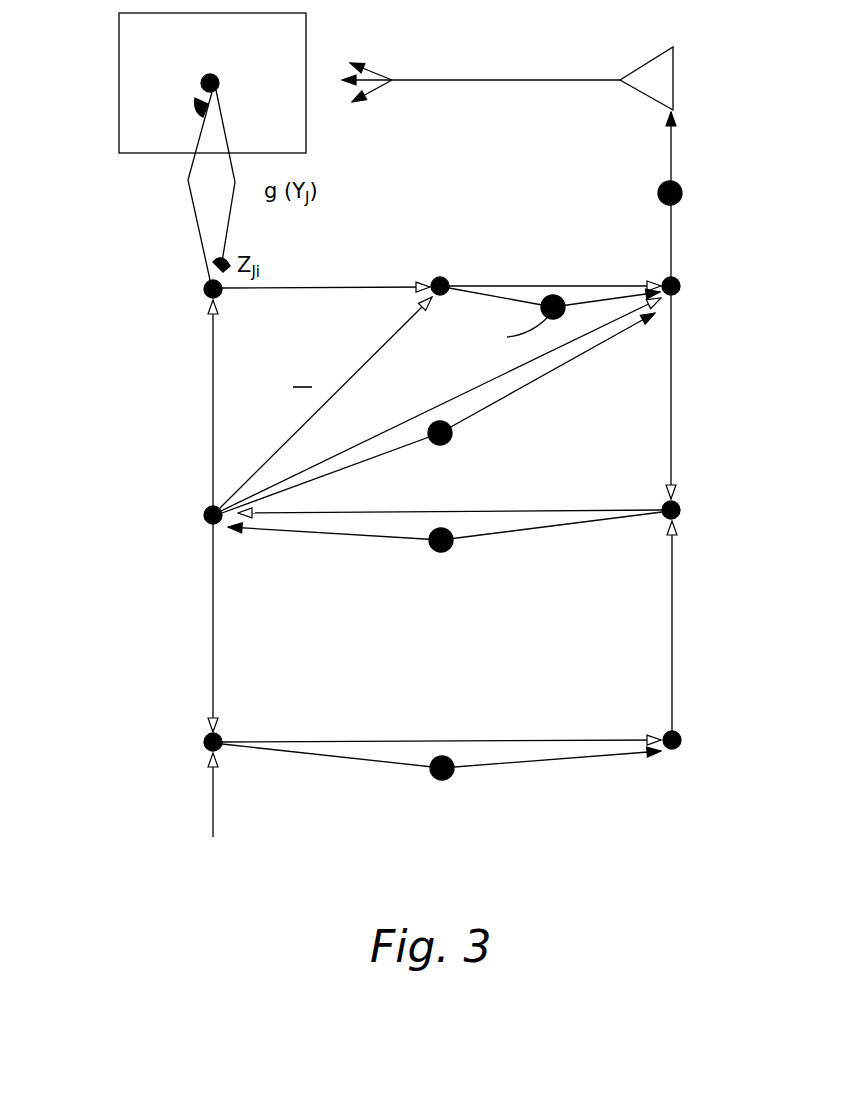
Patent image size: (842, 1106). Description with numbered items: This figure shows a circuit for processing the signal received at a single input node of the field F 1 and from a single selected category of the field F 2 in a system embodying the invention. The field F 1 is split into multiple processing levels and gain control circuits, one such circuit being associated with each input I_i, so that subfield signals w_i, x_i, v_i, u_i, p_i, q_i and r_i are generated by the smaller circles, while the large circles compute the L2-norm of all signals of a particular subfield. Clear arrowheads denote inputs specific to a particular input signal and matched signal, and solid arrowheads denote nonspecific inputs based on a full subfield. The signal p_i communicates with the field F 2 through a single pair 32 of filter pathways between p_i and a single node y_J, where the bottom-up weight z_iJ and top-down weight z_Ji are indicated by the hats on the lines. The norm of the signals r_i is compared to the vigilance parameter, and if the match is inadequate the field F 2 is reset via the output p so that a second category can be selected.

The pair of filter pathways 32 is at (180, 204).
The F2 field (Y_J node box) 2 is at (212, 83).
The F1 field (neural network node i) 1 is at (390, 567).
The F2 reset output p is at (534, 162).